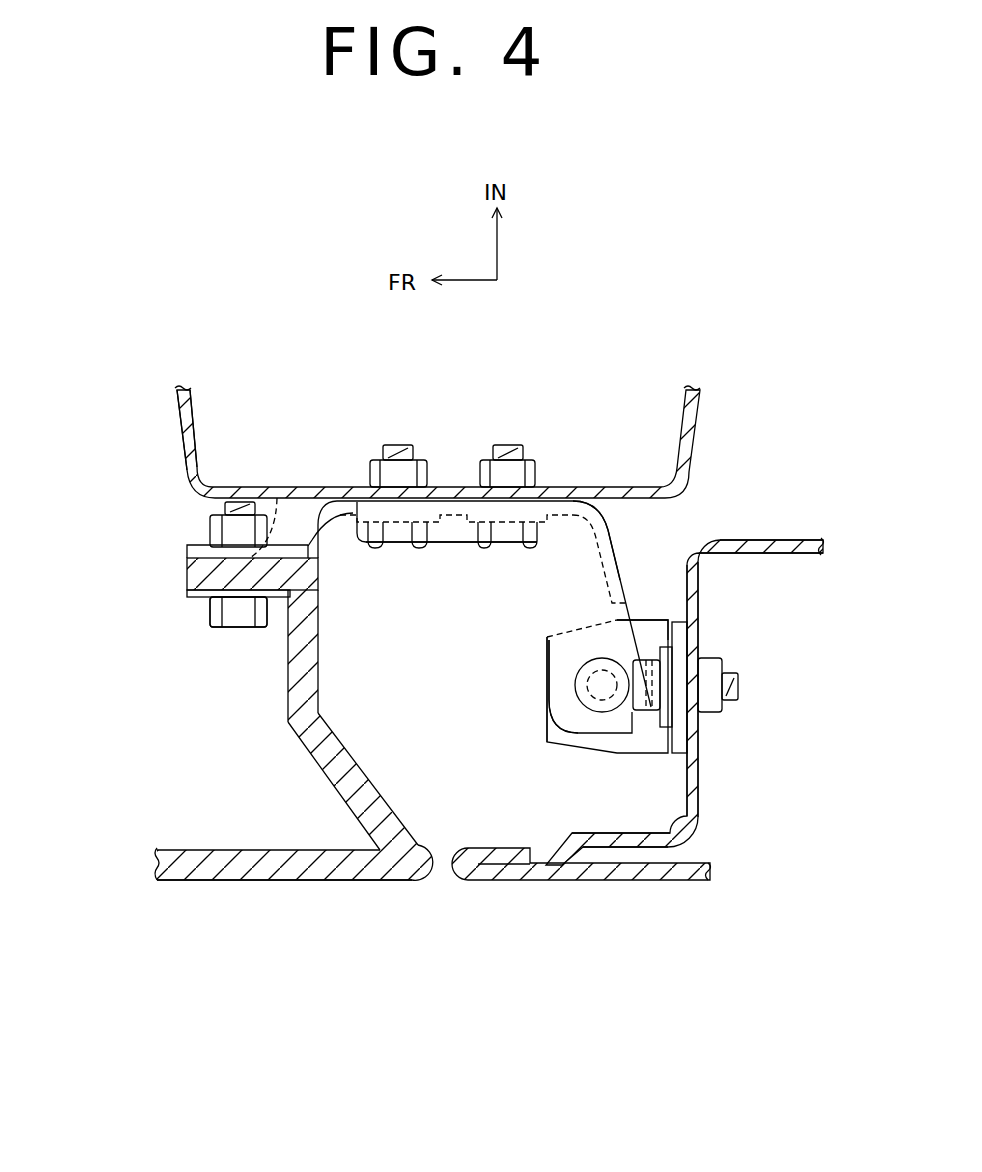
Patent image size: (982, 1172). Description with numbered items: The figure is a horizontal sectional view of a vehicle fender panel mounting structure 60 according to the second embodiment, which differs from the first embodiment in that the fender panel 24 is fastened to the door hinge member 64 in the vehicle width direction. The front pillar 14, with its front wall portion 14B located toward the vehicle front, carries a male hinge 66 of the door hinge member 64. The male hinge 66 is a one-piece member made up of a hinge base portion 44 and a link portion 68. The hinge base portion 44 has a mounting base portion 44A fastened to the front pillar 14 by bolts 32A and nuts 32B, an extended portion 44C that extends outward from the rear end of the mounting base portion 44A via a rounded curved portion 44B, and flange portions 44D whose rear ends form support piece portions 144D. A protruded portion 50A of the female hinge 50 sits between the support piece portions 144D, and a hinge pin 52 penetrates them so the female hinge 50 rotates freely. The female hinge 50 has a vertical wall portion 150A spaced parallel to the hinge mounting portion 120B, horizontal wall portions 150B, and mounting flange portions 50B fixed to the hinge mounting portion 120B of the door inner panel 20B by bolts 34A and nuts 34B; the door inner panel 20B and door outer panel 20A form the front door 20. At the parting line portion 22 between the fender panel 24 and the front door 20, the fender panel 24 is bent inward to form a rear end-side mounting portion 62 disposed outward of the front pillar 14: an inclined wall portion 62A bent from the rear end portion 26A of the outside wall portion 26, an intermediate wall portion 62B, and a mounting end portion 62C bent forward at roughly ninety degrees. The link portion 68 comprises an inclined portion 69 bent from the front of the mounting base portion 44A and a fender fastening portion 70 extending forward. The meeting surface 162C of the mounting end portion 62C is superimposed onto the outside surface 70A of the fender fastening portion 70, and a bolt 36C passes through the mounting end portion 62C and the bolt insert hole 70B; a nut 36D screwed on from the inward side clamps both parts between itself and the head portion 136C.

The front pillar 14 is at (176, 418).
The front wall portion 14B is at (190, 443).
The front door 20 is at (685, 722).
The door outer panel 20A is at (698, 880).
The door inner panel 20B is at (766, 536).
The hinge mounting portion 120B is at (687, 800).
The parting line portion 22 is at (446, 877).
The fender panel 24 is at (270, 907).
The outside wall portion 26 is at (294, 897).
The rear end portion 26A is at (343, 882).
The bolt 32A is at (417, 547).
The nut 32B is at (368, 462).
The bolt 34A is at (637, 712).
The nut 34B is at (710, 660).
The bolt 36C is at (252, 632).
The nut 36D is at (214, 495).
The head portion 136C is at (217, 628).
The hinge base portion 44 is at (521, 538).
The mounting base portion 44A is at (452, 497).
The curved portion 44B is at (597, 507).
The extended portion 44C is at (614, 553).
The flange portion 44D is at (547, 579).
The female hinge 50 is at (626, 697).
The protruded portion 50A is at (567, 752).
The mounting flange portion 50B is at (676, 742).
The vertical wall portion 150A is at (546, 707).
The horizontal wall portion 150B is at (654, 624).
The support piece portion 144D is at (563, 668).
The hinge pin 52 is at (597, 659).
The vehicle fender panel mounting structure 60 is at (179, 558).
The rear end-side mounting portion 62 is at (289, 735).
The inclined wall portion 62A is at (362, 772).
The intermediate wall portion 62B is at (288, 703).
The mounting end portion 62C is at (199, 597).
The door hinge member 64 is at (648, 525).
The male hinge 66 is at (430, 634).
The link portion 68 is at (330, 565).
The inclined portion 69 is at (313, 497).
The fender fastening portion 70 is at (213, 558).
The outside surface 70A is at (188, 572).
The bolt insert hole 70B is at (275, 495).
The meeting surface 162C is at (190, 548).